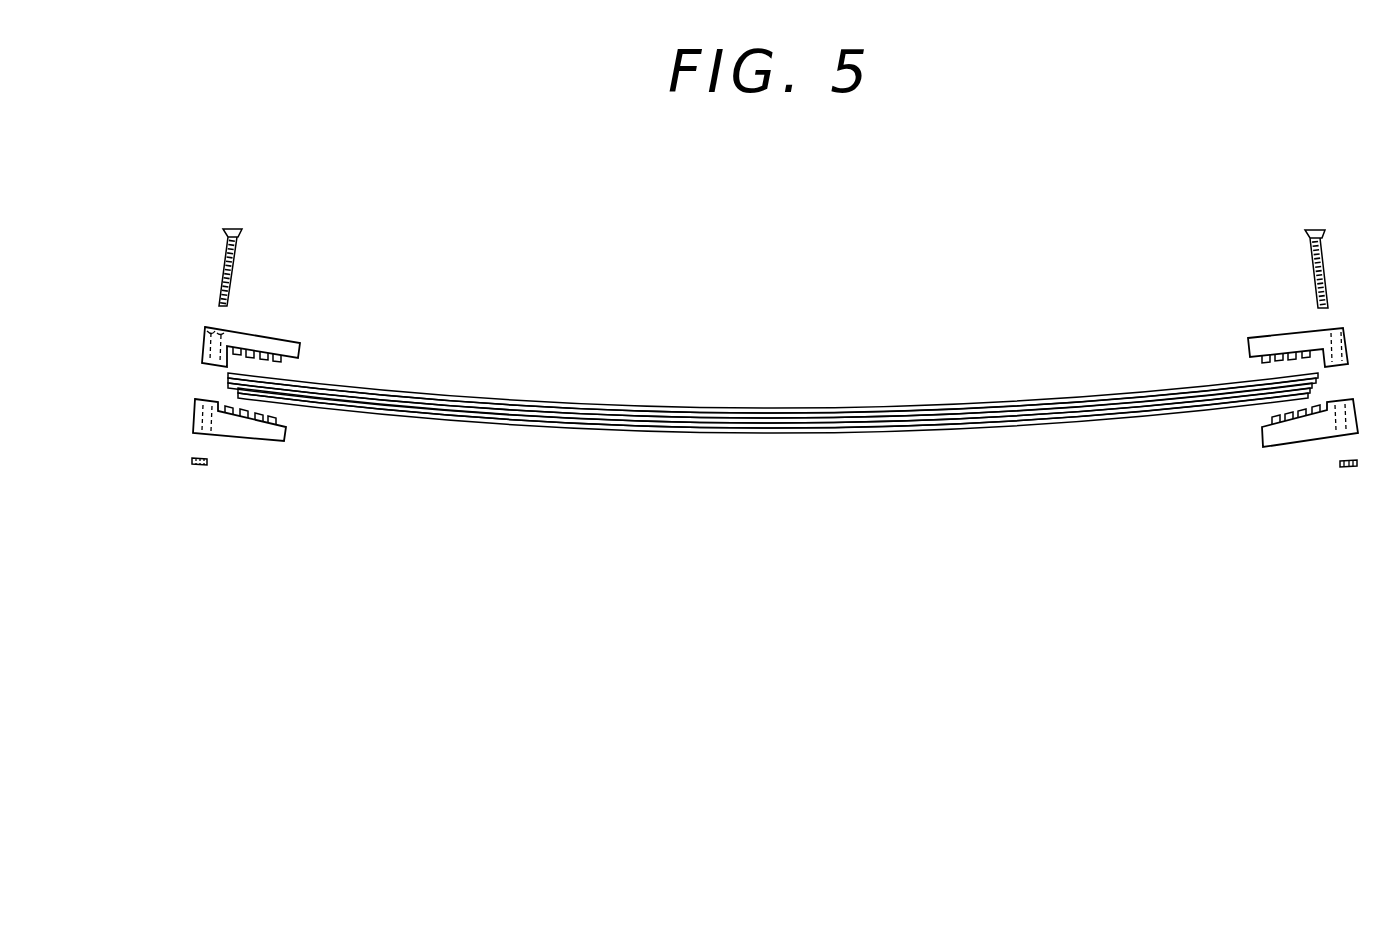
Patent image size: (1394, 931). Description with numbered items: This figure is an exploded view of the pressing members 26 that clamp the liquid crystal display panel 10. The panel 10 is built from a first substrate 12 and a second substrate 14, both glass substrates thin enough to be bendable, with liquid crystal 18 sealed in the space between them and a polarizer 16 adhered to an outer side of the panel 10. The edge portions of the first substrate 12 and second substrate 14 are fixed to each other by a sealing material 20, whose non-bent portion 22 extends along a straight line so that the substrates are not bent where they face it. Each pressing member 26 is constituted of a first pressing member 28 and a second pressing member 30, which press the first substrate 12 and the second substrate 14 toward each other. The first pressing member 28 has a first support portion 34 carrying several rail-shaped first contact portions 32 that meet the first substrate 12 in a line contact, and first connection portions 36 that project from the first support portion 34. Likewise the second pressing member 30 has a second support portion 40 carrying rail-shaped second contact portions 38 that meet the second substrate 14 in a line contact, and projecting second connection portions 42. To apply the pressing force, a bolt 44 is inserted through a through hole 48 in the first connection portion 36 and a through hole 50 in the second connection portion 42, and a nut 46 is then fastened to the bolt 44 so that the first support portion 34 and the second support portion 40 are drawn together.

The liquid crystal display panel 10 is at (773, 397).
The first substrate 12 is at (890, 410).
The second substrate 14 is at (790, 428).
The polarizer 16 is at (960, 407).
The liquid crystal 18 is at (1022, 418).
The sealing material 20 is at (243, 393).
The non-bent portion 22 is at (246, 425).
The pressing member 26 is at (114, 247).
The first pressing member 28 is at (247, 304).
The second pressing member 30 is at (247, 471).
The first contact portion 32 is at (286, 360).
The first support portion 34 is at (298, 343).
The first connection portion 36 is at (236, 358).
The second contact portion 38 is at (280, 418).
The second support portion 40 is at (272, 440).
The second connection portion 42 is at (236, 416).
The bolt 44 is at (222, 270).
The nut 46 is at (193, 461).
The through hole 48 is at (1330, 332).
The through hole 50 is at (1345, 434).